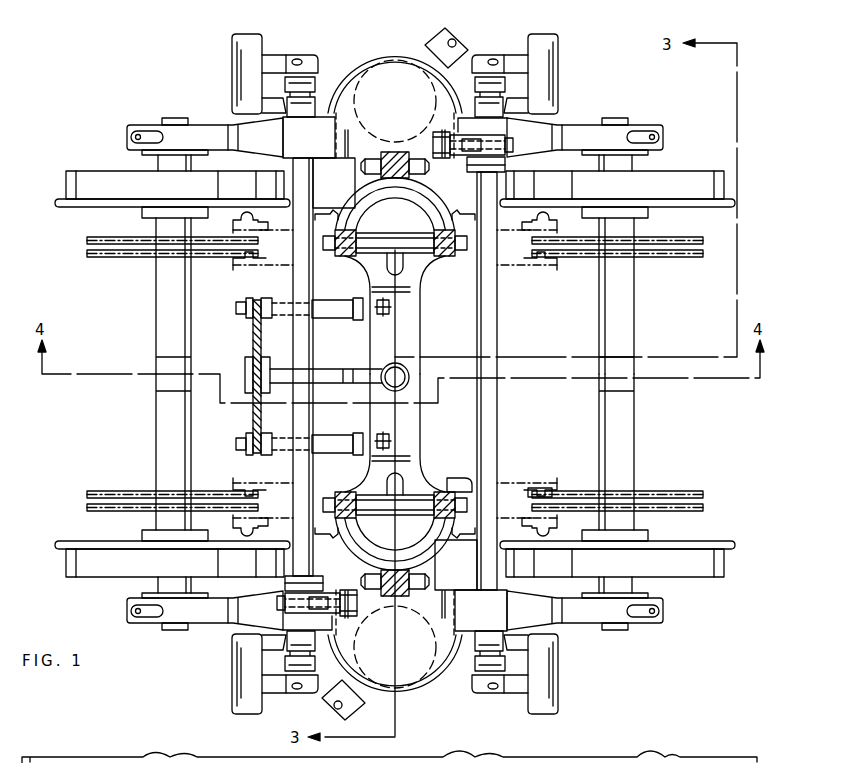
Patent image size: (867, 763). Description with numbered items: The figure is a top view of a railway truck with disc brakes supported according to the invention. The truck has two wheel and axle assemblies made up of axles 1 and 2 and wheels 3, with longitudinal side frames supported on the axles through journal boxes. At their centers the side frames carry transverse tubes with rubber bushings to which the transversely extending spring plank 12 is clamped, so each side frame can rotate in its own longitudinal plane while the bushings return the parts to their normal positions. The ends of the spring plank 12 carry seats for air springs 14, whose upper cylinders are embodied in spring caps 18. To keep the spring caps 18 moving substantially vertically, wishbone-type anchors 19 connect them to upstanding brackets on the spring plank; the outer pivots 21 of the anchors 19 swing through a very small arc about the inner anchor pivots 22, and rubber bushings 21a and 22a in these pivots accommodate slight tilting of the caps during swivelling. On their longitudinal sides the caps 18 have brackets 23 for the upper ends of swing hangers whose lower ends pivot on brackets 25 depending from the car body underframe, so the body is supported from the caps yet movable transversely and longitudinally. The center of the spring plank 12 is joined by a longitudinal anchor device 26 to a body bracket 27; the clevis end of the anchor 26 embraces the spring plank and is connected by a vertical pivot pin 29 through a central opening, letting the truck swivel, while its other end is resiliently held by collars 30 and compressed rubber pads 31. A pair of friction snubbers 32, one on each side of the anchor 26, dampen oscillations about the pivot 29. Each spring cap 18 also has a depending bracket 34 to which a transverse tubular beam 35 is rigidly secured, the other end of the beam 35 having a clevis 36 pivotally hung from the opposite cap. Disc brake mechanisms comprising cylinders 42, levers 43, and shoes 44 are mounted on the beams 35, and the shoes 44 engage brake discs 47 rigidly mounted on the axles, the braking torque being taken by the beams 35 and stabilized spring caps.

The axle 1 is at (633, 437).
The axle 2 is at (152, 433).
The wheels 3 is at (65, 560).
The spring plank 12 is at (395, 493).
The air springs 14 is at (369, 52).
The spring caps 18 is at (443, 758).
The anchors 19 is at (445, 212).
The outer pivots 21 is at (433, 568).
The rubber bushings 21a is at (395, 178).
The inner anchor pivots 22 is at (347, 503).
The rubber bushings 22a is at (355, 258).
The brackets 23 is at (292, 88).
The brackets 25 is at (265, 672).
The anchor device 26 is at (323, 372).
The bracket 27 is at (255, 337).
The pivot pin 29 is at (401, 372).
The collars 30 is at (264, 404).
The rubber pads 31 is at (262, 378).
The friction snubbers 32 is at (328, 312).
The bracket 34 is at (320, 148).
The tubular beam 35 is at (292, 290).
The clevis 36 is at (504, 161).
The cylinders 42 is at (450, 477).
The levers 43 is at (520, 477).
The shoes 44 is at (553, 482).
The brake discs 47 is at (105, 258).